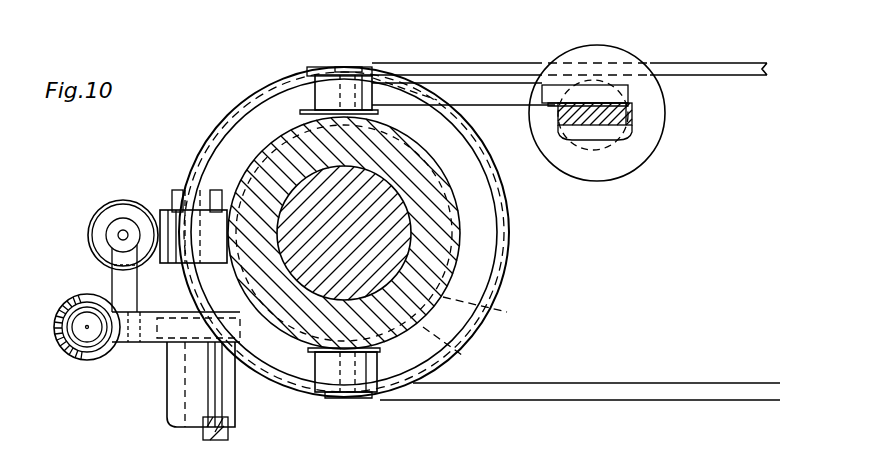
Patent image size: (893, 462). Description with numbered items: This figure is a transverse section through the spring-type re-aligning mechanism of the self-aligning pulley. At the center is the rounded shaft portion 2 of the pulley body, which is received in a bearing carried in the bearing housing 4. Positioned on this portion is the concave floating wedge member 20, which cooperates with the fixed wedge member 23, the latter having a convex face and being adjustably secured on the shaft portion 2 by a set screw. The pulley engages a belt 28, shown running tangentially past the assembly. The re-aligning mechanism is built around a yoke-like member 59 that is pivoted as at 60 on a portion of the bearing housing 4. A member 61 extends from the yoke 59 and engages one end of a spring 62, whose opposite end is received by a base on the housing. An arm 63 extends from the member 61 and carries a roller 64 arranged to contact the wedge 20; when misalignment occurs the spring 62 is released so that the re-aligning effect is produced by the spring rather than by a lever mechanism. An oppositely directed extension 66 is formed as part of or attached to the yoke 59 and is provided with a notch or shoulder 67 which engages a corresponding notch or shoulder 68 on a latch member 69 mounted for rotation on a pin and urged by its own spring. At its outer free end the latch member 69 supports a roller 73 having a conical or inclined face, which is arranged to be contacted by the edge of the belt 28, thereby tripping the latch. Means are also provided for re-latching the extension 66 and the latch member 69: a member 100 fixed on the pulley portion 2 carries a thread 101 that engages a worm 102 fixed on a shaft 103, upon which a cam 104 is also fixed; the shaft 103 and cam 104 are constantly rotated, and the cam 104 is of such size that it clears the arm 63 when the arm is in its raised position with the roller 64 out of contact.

The rounded portion 2 is at (400, 241).
The housing 4 is at (430, 263).
The floating wedge member 20 is at (478, 335).
The fixed wedge member 23 is at (470, 291).
The belt 28 is at (708, 63).
The yoke-like member 59 is at (252, 116).
The pivot 60 is at (352, 67).
The member 61 is at (130, 343).
The spring 62 is at (78, 347).
The arm 63 is at (118, 283).
The roller 64 is at (120, 212).
The extension 66 is at (510, 95).
The notch or shoulder 67 is at (628, 101).
The notch or shoulder 68 is at (592, 122).
The latch member 69 is at (632, 113).
The roller 73 is at (648, 125).
The member 100 is at (462, 355).
The thread 101 is at (507, 312).
The worm 102 is at (165, 212).
The shaft 103 is at (197, 431).
The cam 104 is at (245, 372).